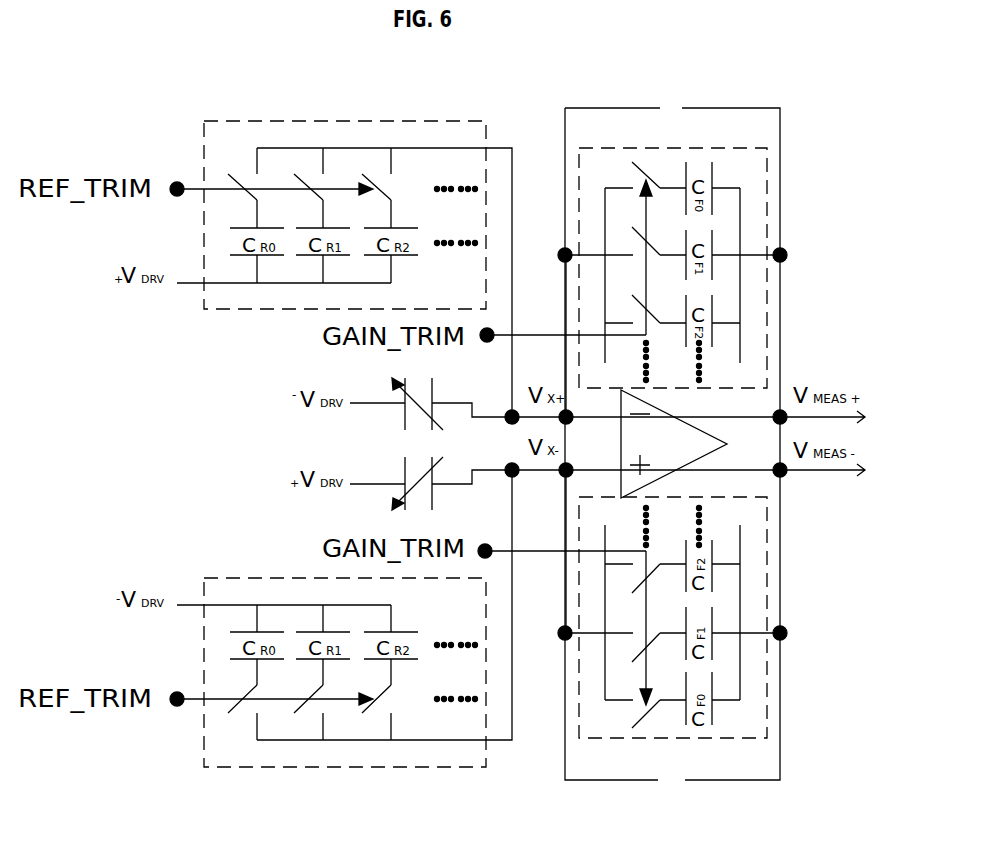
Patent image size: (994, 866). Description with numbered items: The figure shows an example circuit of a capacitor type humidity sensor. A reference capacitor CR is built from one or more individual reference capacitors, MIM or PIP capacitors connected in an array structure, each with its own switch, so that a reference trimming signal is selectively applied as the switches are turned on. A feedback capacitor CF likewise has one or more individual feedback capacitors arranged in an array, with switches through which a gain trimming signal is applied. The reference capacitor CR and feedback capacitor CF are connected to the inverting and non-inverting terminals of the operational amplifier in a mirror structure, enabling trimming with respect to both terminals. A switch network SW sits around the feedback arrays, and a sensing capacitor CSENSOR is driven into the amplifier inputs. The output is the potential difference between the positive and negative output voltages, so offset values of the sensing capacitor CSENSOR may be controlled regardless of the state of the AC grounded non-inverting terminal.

The switch network SW is at (688, 805).
The reference capacitor CR is at (345, 444).
The feedback capacitor CF is at (673, 447).
The sensor capacitor CSENSOR is at (565, 446).